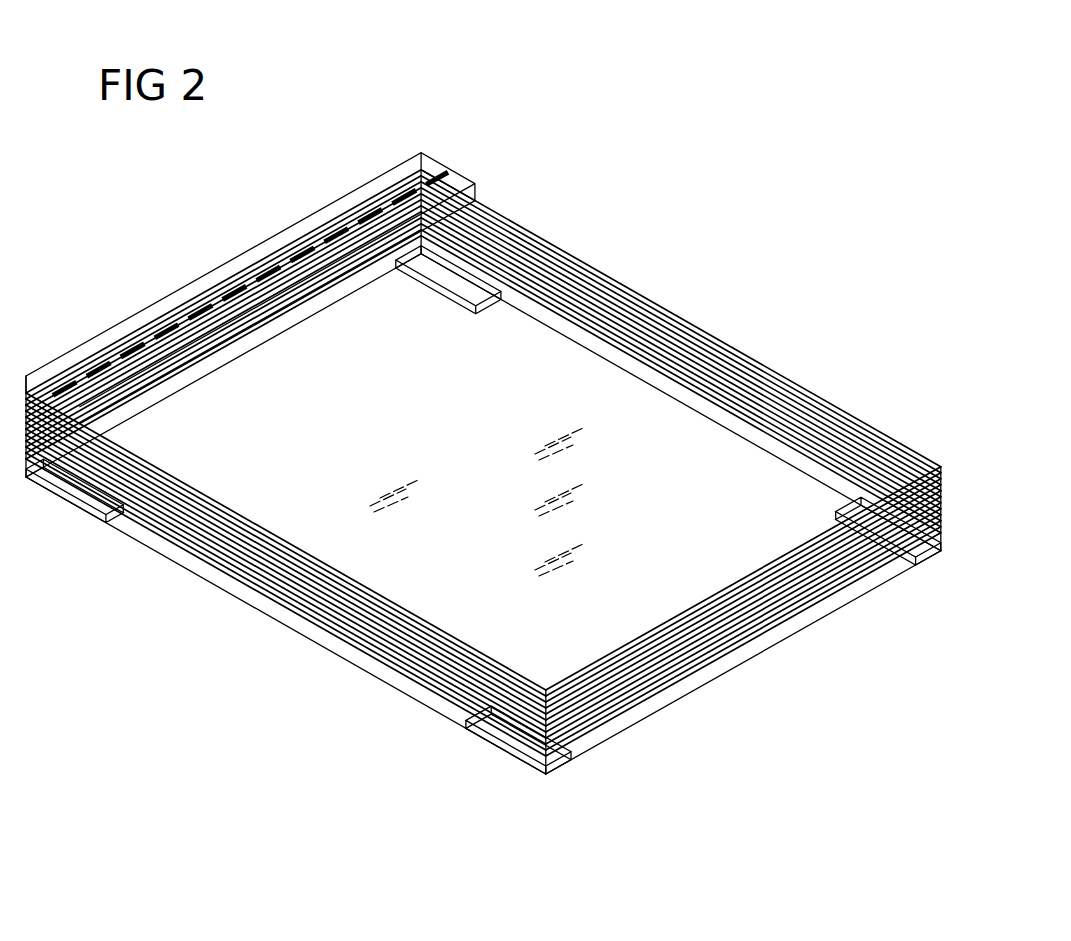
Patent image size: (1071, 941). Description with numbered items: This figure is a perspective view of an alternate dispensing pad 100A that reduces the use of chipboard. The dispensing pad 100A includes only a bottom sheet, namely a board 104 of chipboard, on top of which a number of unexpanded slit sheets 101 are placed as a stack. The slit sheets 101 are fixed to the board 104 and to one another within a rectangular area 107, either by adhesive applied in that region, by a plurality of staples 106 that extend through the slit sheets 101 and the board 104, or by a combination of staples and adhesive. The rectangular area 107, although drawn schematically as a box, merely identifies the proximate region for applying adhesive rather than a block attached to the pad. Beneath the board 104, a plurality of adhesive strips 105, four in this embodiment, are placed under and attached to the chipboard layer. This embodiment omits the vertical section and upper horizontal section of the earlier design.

The dispensing pad 100A is at (598, 190).
The slit sheets 101 is at (740, 350).
The board 104 is at (240, 585).
The adhesive strips 105 is at (500, 739).
The staples 106 is at (185, 310).
The rectangular area 107 is at (298, 230).